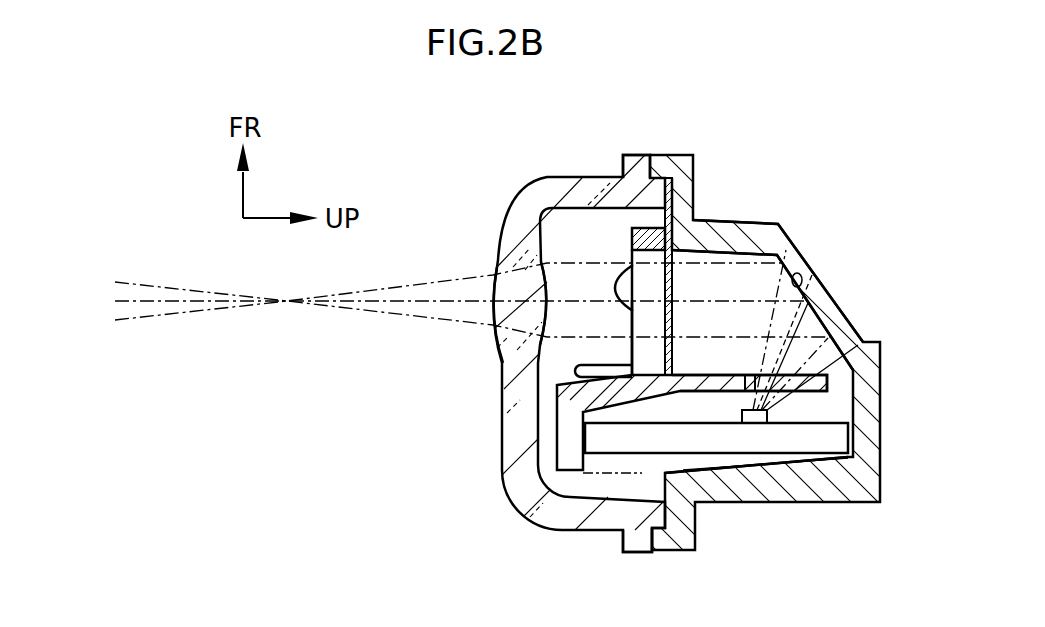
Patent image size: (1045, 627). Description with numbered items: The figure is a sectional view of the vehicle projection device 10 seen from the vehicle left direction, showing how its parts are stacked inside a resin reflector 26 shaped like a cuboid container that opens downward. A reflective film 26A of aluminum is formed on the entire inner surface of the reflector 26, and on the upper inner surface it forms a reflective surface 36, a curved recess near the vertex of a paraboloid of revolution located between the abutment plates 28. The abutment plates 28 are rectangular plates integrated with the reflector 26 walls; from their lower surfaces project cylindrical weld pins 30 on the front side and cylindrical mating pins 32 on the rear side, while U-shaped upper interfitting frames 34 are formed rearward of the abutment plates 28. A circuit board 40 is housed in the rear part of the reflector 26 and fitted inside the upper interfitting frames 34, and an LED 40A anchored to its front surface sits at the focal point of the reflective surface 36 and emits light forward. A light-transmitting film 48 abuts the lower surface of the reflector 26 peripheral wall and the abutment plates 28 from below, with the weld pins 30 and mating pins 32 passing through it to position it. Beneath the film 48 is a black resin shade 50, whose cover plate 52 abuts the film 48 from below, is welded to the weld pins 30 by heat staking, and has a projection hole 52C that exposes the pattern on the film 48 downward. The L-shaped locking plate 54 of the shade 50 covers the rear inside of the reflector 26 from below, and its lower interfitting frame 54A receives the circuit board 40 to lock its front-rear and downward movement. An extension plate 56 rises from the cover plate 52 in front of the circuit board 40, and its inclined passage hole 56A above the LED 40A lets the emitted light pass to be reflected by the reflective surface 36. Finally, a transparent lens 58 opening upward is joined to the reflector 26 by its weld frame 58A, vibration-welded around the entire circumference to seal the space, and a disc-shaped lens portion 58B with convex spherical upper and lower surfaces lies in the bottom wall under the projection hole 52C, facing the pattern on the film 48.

The vehicle projection device 10 is at (461, 157).
The reflector 26 is at (706, 169).
The reflective film 26A is at (737, 253).
The abutment plate 28 is at (772, 226).
The weld pin 30 is at (617, 290).
The mating pin 32 is at (556, 376).
The upper interfitting frame 34 is at (848, 459).
The reflective surface 36 is at (801, 284).
The circuit board 40 is at (688, 477).
The LED 40A is at (787, 420).
The film 48 is at (673, 281).
The shade 50 is at (628, 226).
The cover plate 52 is at (631, 239).
The projection hole 52C is at (650, 328).
The locking plate 54 is at (557, 440).
The lower interfitting frame 54A is at (607, 475).
The extension plate 56 is at (690, 373).
The passage hole 56A is at (823, 312).
The lens 58 is at (540, 177).
The weld frame 58A is at (668, 157).
The lens portion 58B is at (497, 268).